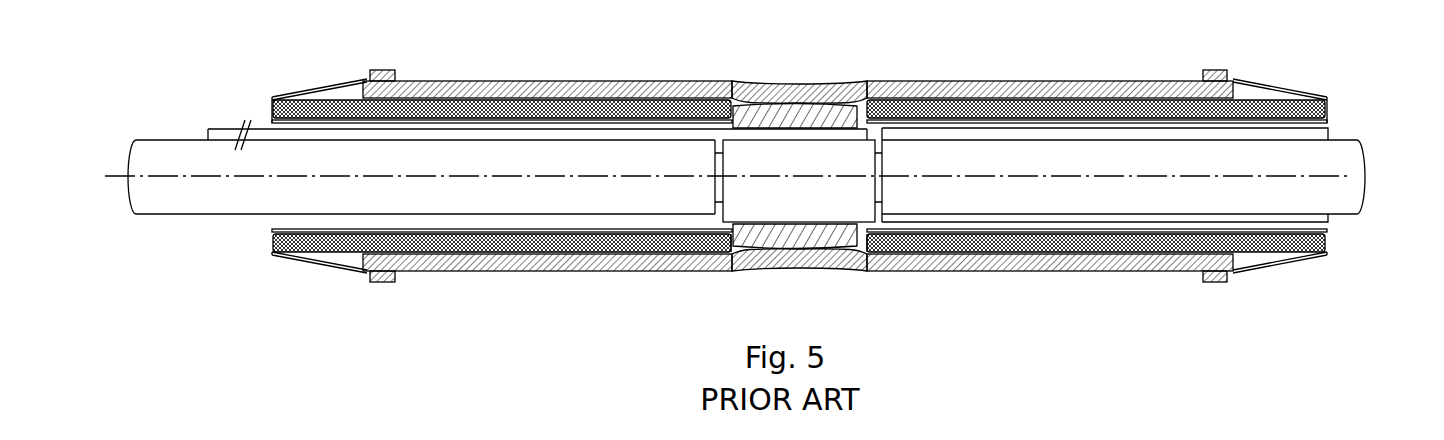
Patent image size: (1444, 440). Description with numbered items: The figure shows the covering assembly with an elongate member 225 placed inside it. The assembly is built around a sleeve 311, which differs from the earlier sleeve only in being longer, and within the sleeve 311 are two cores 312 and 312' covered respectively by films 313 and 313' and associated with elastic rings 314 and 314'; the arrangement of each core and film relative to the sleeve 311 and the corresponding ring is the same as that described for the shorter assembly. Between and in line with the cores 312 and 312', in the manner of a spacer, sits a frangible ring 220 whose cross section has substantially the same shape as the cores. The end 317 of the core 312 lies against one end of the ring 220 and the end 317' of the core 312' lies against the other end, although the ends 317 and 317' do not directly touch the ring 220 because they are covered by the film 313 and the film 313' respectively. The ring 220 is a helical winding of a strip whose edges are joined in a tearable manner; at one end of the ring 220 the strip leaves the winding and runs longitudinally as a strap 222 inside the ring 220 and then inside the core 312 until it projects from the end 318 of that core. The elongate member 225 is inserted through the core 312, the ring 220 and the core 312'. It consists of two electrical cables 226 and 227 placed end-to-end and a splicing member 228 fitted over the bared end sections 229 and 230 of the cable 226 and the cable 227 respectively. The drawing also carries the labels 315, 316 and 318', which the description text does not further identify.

The frangible ring 220 is at (803, 100).
The strap 222 is at (228, 133).
The elongate member 225 is at (141, 118).
The electrical cable 226 is at (190, 198).
The electrical cable 227 is at (1333, 198).
The splicing member 228 is at (800, 207).
The bared end section 229 is at (720, 162).
The bared end section 230 is at (882, 160).
The sleeve 311 is at (895, 82).
The core 312 is at (502, 148).
The core 312' is at (1097, 149).
The film 313 is at (547, 154).
The film 313' is at (1050, 154).
The elastic ring 314 is at (389, 149).
The elastic ring 314' is at (1222, 149).
The first tapered sleeve 315 is at (360, 92).
The second tapered sleeve 316 is at (1240, 90).
The end of core 317 is at (679, 270).
The end of core 317' is at (923, 270).
The end 318 is at (232, 95).
The second sleeve end 318' is at (1369, 99).